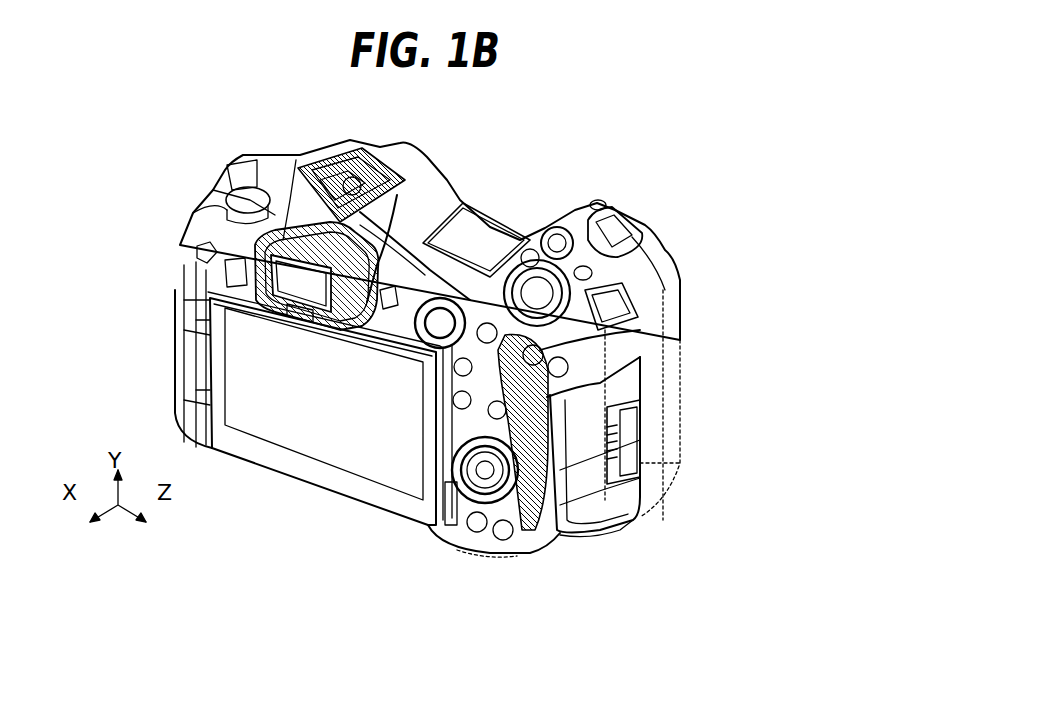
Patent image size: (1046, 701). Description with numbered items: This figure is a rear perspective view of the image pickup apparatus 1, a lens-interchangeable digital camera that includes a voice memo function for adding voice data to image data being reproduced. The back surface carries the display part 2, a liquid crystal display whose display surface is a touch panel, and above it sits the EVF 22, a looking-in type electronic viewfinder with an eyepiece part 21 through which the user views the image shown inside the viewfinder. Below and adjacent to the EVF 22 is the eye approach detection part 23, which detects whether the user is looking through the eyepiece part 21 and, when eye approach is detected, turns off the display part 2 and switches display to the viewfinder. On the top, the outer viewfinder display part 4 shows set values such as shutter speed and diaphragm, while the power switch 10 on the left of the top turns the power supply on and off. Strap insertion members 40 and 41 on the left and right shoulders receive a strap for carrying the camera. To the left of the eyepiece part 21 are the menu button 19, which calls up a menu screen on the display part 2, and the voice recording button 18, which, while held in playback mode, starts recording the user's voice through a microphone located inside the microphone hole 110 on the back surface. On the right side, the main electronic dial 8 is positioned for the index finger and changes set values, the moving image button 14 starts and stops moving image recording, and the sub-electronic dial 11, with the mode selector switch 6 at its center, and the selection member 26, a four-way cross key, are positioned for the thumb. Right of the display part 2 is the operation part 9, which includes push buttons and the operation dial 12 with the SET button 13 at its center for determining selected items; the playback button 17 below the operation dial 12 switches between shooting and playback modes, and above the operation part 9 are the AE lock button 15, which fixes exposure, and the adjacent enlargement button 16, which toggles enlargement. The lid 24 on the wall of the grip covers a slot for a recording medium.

The image pickup apparatus 1 is at (645, 136).
The display part 2 is at (305, 432).
The outer viewfinder display part 4 is at (493, 232).
The mode selector switch 6 is at (535, 250).
The main electronic dial 8 is at (612, 215).
The operation part 9 is at (493, 550).
The power switch 10 is at (205, 183).
The sub-electronic dial 11 is at (592, 272).
The operation dial 12 is at (530, 513).
The SET button 13 is at (625, 503).
The moving image button 14 is at (562, 228).
The AE lock button 15 is at (545, 352).
The enlargement button 16 is at (568, 370).
The playback button 17 is at (471, 533).
The voice recording button 18 is at (195, 252).
The menu button 19 is at (225, 271).
The eyepiece part 21 is at (303, 277).
The EVF 22 is at (185, 318).
The eye approach detection part 23 is at (260, 322).
The lid 24 is at (653, 470).
The selection member 26 is at (430, 295).
The strap insertion member 40 is at (243, 173).
The strap insertion member 41 is at (630, 302).
The microphone hole 110 is at (457, 528).